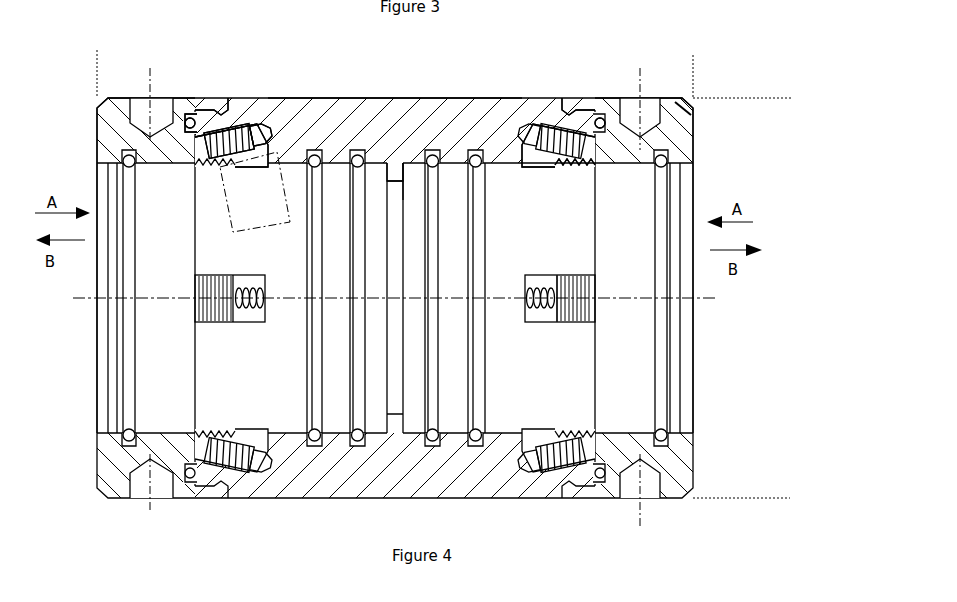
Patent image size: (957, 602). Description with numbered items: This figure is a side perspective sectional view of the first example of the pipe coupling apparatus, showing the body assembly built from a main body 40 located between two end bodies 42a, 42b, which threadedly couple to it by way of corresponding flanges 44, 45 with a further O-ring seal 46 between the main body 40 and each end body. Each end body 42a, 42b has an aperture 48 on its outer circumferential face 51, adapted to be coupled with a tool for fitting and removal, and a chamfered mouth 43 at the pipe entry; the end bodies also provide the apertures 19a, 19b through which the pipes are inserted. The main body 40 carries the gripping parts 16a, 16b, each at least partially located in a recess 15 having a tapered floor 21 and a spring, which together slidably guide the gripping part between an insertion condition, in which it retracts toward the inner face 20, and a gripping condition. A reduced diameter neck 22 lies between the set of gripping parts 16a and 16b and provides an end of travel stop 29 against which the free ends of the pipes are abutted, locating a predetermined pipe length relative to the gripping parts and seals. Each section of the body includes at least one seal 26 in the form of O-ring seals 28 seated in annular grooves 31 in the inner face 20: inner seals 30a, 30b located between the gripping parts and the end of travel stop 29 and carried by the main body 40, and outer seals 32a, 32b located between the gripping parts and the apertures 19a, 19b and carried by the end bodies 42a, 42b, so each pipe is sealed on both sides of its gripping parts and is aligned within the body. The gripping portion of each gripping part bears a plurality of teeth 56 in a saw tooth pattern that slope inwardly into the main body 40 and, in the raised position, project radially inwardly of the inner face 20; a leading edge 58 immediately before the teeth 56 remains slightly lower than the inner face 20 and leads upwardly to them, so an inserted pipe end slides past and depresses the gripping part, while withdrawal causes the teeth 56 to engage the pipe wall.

The recess 15 is at (248, 128).
The gripping part 16a is at (222, 130).
The gripping part 16b is at (596, 147).
The aperture 19a is at (95, 345).
The aperture 19b is at (693, 355).
The inner face 20 is at (500, 163).
The tapered floor 21 is at (553, 133).
The neck 22 is at (390, 180).
The seal 26 is at (668, 153).
The O-ring seal 28 is at (361, 154).
The end of travel stop 29 is at (404, 170).
The inner seal 30a is at (357, 443).
The inner seal 30b is at (477, 443).
The annular groove 31 is at (677, 120).
The outer seal 32a is at (127, 440).
The outer seal 32b is at (663, 442).
The main body 40 is at (447, 110).
The end body 42a is at (108, 121).
The end body 42b is at (678, 122).
The chamfered mouth 43 is at (107, 425).
The flange 44 is at (233, 117).
The flange 45 is at (199, 120).
The O-ring seal 46 is at (188, 118).
The aperture 48 is at (142, 488).
The outer circumferential face 51 is at (693, 130).
The teeth 56 is at (563, 166).
The leading edge 58 is at (597, 164).